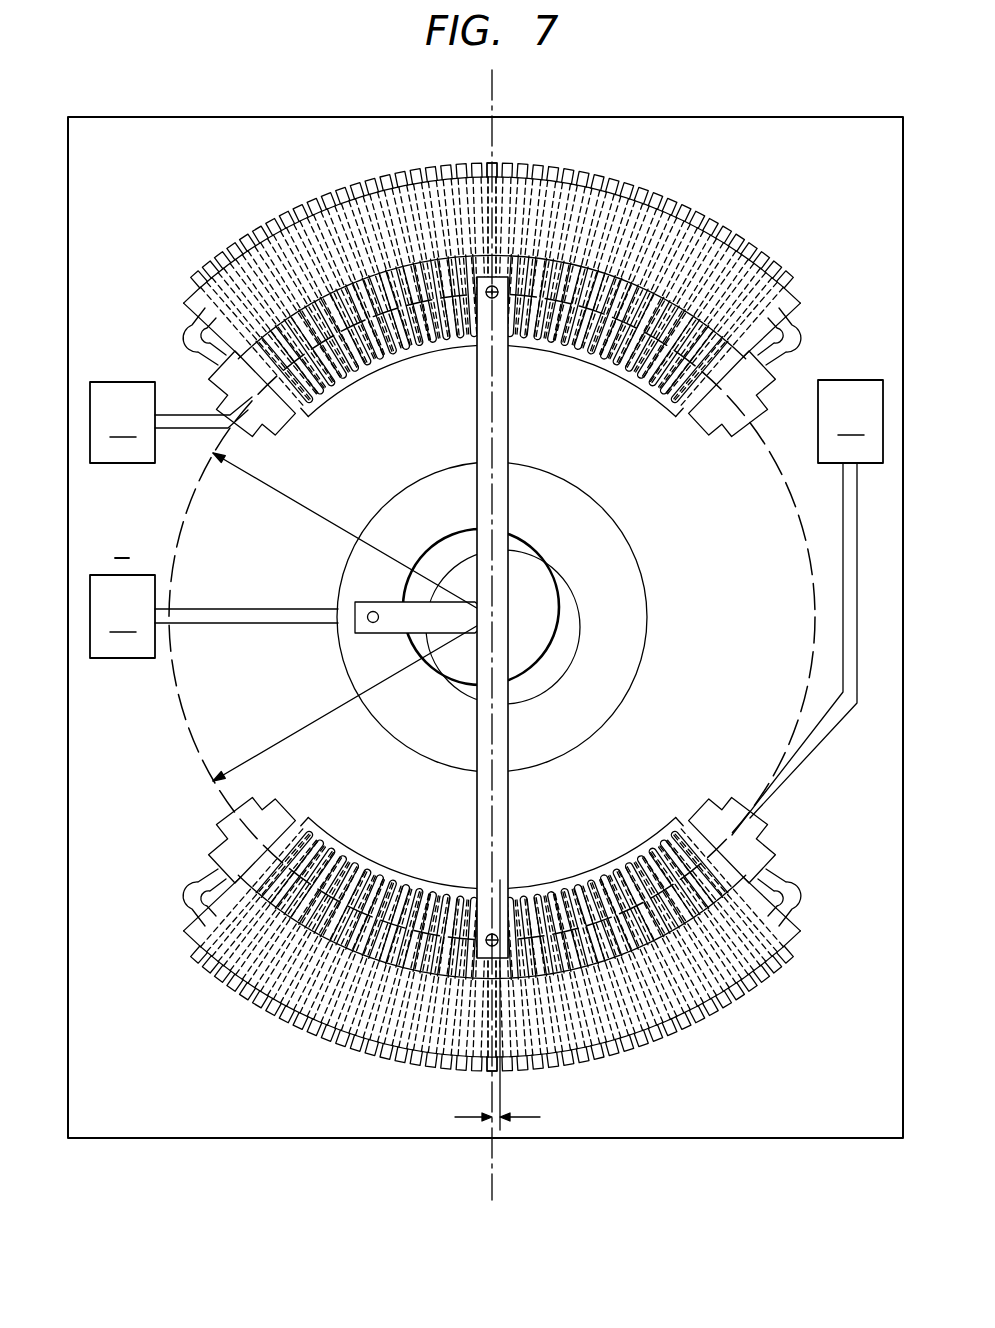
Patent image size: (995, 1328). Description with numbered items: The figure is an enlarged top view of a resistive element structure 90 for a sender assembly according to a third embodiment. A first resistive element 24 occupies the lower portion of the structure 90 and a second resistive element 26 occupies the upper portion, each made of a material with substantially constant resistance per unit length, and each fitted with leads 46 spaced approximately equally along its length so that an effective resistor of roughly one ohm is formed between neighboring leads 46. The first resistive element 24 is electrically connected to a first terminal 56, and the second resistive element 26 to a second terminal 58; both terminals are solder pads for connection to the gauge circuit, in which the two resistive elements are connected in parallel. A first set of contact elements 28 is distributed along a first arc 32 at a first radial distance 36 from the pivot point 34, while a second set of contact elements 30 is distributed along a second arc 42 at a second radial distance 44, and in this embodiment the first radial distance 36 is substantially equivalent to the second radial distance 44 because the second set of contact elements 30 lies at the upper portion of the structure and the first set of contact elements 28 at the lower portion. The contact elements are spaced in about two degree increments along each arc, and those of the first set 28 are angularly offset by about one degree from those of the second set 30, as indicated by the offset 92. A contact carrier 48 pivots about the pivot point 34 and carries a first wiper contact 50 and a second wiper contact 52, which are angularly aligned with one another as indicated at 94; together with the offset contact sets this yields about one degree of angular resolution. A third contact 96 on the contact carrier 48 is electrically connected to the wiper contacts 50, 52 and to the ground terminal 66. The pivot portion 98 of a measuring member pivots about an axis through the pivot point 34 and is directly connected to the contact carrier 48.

The first resistive element 24 is at (804, 933).
The second resistive element 26 is at (799, 300).
The first set of contact elements 28 is at (360, 853).
The second set of contact elements 30 is at (350, 383).
The first arc 32 is at (212, 776).
The pivot point 34 is at (504, 617).
The first radial distance 36 is at (291, 734).
The second arc 42 is at (186, 505).
The second radial distance 44 is at (291, 500).
The lead 46 is at (489, 165).
The contact carrier 48 is at (477, 441).
The first wiper contact 50 is at (487, 935).
The second wiper contact 52 is at (487, 298).
The first terminal 56 is at (807, 593).
The second terminal 58 is at (171, 408).
The ground terminal 66 is at (214, 608).
The resistive element structure 90 is at (700, 114).
The angular offset 92 is at (514, 1006).
The angular alignment 94 is at (490, 80).
The third contact 96 is at (373, 624).
The pivot portion 98 is at (549, 630).